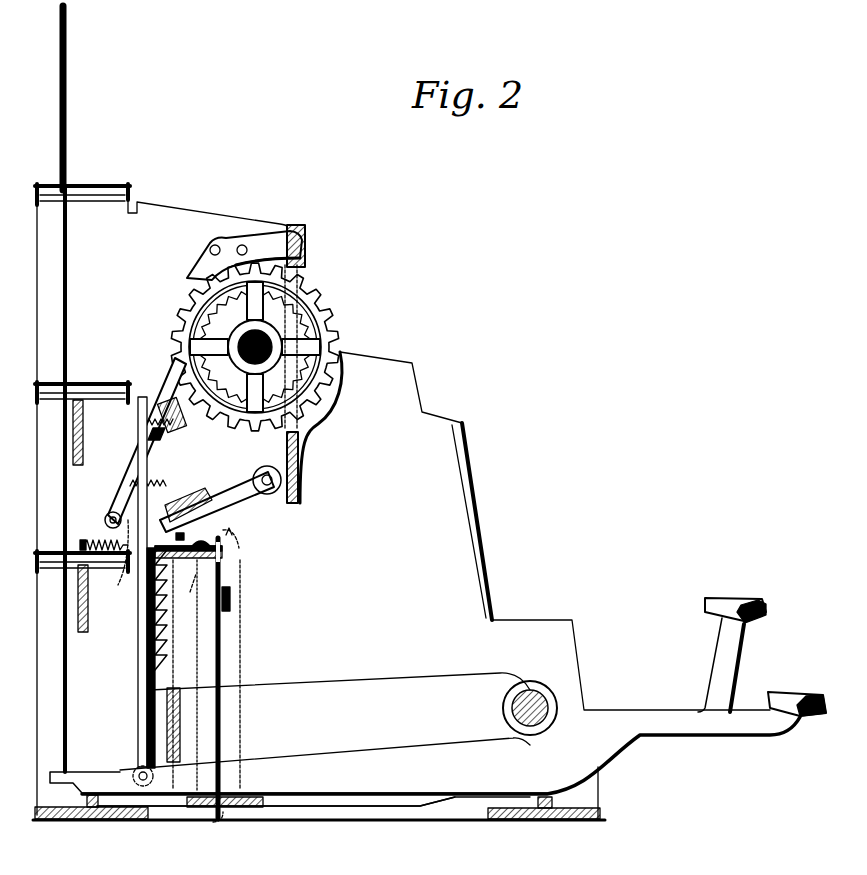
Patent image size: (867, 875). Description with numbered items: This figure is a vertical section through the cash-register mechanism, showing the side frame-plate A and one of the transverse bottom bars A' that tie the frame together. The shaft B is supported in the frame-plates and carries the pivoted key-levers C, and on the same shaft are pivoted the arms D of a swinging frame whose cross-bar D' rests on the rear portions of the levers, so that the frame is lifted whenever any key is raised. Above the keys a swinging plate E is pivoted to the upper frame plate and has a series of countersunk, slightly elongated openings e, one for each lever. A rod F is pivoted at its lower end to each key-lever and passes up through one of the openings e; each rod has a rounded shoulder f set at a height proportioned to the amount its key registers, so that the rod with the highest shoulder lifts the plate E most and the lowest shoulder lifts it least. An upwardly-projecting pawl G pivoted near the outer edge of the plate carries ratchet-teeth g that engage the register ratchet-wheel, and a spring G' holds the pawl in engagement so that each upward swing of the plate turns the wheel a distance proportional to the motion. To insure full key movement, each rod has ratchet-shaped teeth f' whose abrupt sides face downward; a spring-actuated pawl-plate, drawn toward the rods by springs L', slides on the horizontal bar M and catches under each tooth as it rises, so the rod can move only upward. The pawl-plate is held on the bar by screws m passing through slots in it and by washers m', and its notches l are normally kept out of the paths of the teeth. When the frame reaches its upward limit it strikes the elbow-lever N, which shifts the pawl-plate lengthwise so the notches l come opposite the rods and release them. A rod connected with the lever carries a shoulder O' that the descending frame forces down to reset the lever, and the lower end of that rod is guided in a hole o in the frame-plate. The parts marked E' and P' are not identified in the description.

The side frame-plates A is at (449, 509).
The transverse bottom bars A' is at (319, 819).
The shaft B is at (533, 724).
The key-levers C is at (425, 761).
The arms of swinging frame D is at (325, 721).
The cross-bar D' is at (184, 725).
The swinging plate E is at (245, 347).
The inner ratchet E' is at (254, 367).
The openings e is at (232, 482).
The rod F is at (138, 662).
The pawl G is at (146, 442).
The spring G' is at (150, 452).
The ratchet-teeth g is at (154, 435).
The springs L' is at (104, 533).
The shoulder f is at (122, 561).
The ratchet-shaped teeth f' is at (181, 675).
The horizontal bar M is at (183, 589).
The notches l is at (202, 675).
The screws m is at (202, 531).
The washers m' is at (241, 530).
The elbow-lever N is at (232, 580).
The hole o is at (222, 748).
The shoulder O' is at (170, 774).
The block P' is at (92, 598).